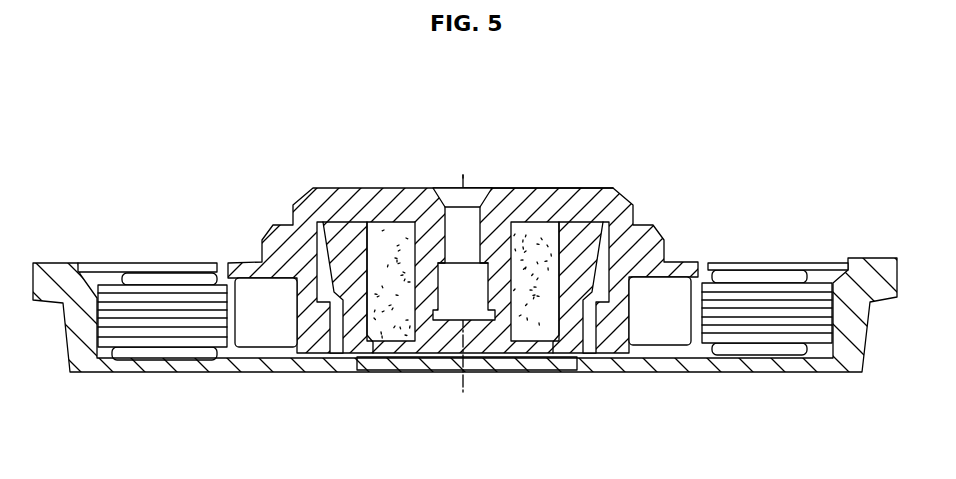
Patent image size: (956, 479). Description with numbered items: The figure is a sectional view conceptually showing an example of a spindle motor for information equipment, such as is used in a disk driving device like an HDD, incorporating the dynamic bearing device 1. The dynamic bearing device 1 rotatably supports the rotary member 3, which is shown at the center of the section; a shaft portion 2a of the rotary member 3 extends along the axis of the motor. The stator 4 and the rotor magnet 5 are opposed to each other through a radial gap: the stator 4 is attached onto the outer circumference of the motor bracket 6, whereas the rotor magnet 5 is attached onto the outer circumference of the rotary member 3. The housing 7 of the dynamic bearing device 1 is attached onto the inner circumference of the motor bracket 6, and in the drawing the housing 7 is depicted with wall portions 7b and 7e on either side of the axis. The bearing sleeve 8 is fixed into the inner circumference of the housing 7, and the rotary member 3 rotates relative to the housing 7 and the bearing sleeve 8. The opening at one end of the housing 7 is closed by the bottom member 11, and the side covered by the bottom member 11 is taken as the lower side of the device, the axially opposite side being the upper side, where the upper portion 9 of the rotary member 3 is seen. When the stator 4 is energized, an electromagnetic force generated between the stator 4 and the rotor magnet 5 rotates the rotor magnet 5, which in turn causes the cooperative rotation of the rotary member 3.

The dynamic bearing device 1 is at (563, 167).
The shaft 2a is at (505, 270).
The rotary member 3 is at (362, 180).
The stator 4 is at (807, 282).
The rotor magnet 5 is at (672, 287).
The motor bracket 6 is at (158, 367).
The housing 7 is at (505, 375).
The left upright wall of base plate 7b is at (350, 332).
The right upright wall of base plate 7e is at (589, 322).
The bearing sleeve 8 is at (389, 235).
The top surface of housing 9 is at (594, 187).
The bottom member 11 is at (425, 368).